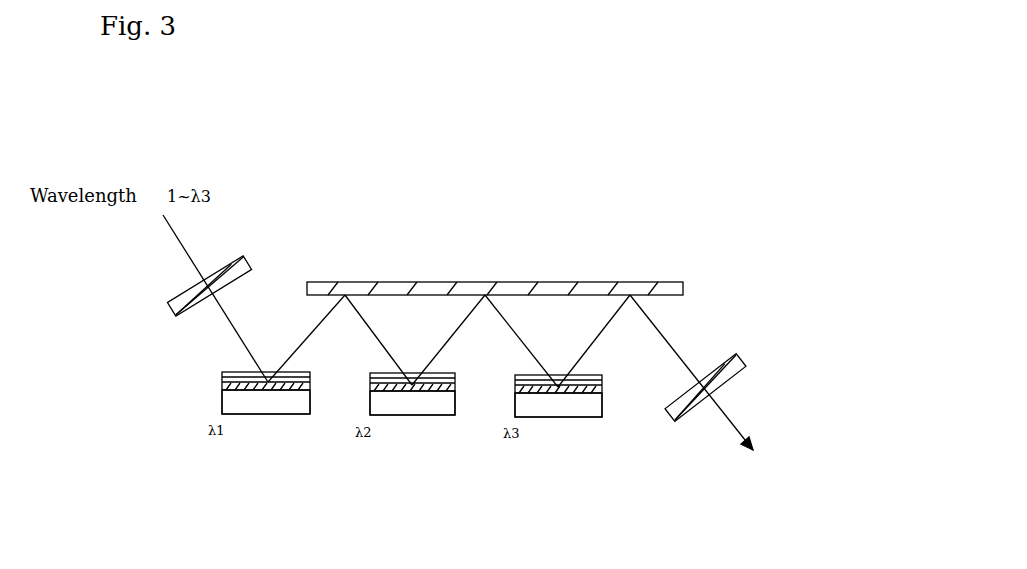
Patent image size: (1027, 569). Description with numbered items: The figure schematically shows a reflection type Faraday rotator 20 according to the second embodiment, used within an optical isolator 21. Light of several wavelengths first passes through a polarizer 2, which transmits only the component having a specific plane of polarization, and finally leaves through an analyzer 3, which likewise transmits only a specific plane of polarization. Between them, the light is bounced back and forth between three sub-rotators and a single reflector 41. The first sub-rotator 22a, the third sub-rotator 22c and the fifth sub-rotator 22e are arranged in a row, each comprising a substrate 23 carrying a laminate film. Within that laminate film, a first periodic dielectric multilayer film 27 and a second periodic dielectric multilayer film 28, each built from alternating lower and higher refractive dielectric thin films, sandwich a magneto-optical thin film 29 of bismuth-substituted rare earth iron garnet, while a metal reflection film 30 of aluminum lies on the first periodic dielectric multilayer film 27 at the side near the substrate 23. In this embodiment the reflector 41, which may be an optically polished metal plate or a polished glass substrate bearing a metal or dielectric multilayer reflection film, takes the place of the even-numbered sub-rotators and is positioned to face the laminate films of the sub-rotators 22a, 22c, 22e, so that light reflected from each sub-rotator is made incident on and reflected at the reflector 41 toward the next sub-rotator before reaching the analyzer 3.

The polarizer 2 is at (135, 313).
The analyzer 3 is at (772, 384).
The reflection type Faraday rotator 20 is at (628, 222).
The optical isolator 21 is at (718, 190).
The first sub-rotator 22a is at (265, 427).
The third sub-rotator 22c is at (422, 428).
The fifth sub-rotator 22e is at (565, 428).
The substrate 23 is at (222, 407).
The first periodic dielectric multilayer film 27 is at (222, 385).
The second periodic dielectric multilayer film 28 is at (222, 374).
The magneto-optical thin film 29 is at (222, 379).
The metal reflection film 30 is at (235, 400).
The reflector 41 is at (445, 288).